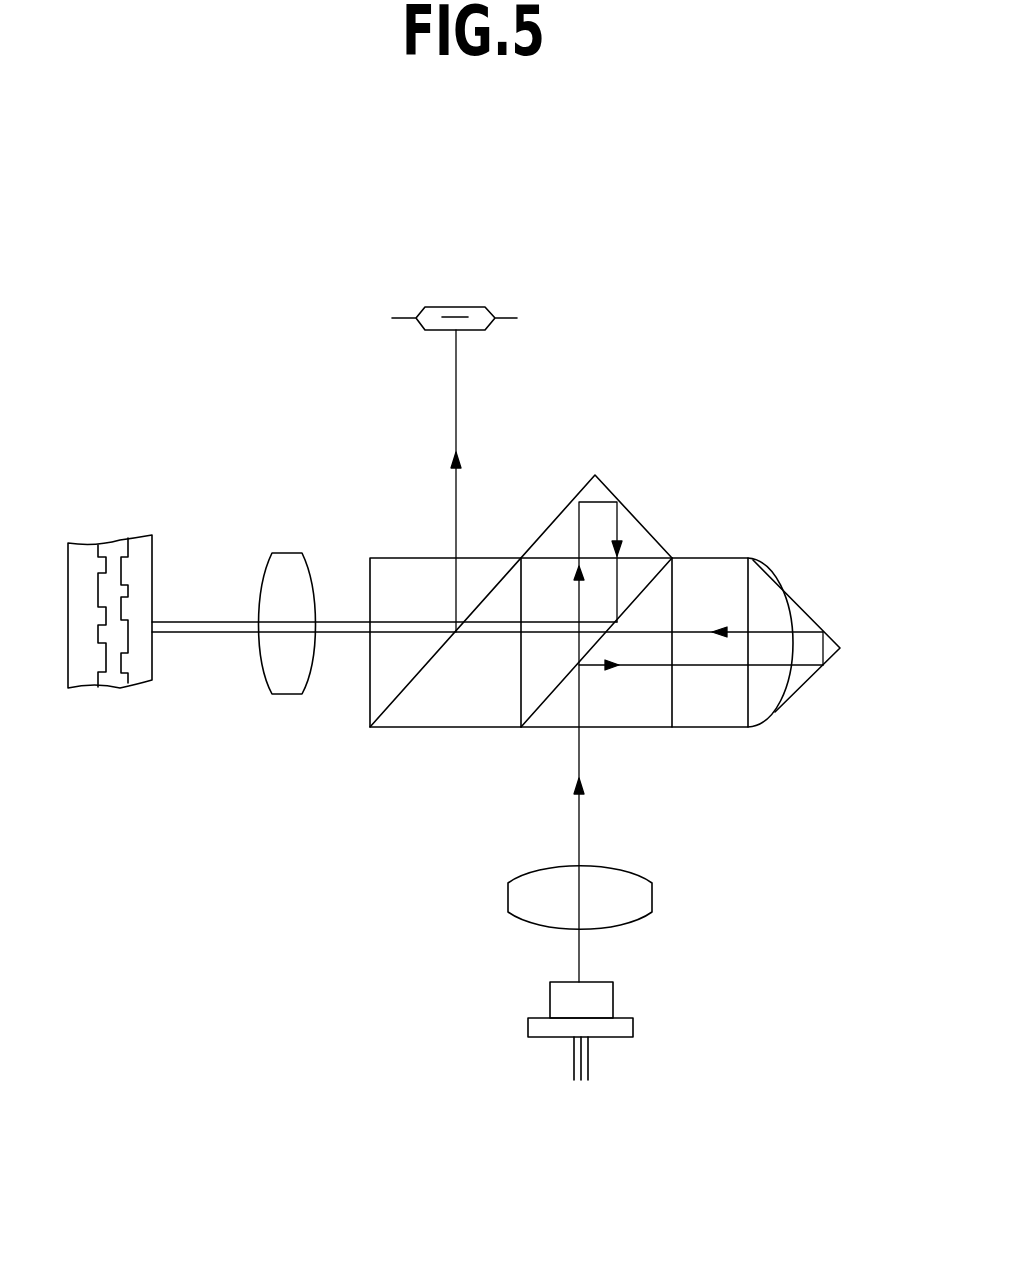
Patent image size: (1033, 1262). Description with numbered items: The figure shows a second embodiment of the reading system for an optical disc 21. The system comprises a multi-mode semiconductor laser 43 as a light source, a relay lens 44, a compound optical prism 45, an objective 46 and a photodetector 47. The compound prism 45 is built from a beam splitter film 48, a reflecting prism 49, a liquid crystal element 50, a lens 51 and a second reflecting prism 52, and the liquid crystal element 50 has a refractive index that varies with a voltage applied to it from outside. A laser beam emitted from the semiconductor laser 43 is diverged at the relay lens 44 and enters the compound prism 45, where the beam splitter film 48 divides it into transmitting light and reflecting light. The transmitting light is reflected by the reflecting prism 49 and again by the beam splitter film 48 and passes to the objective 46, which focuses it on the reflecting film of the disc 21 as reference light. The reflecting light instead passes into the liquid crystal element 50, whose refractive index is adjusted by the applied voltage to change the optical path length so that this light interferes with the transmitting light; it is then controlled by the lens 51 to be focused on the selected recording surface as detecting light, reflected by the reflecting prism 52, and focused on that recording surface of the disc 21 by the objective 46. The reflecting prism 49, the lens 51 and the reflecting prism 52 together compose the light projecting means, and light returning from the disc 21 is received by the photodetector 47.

The disc 21 is at (142, 560).
The multi-mode semiconductor laser 43 is at (612, 997).
The relay lens 44 is at (608, 875).
The compound optical prism 45 is at (637, 605).
The objective 46 is at (287, 680).
The photodetector 47 is at (468, 307).
The beam splitter film 48 is at (548, 705).
The reflecting prism 49 is at (428, 668).
The liquid crystal element 50 is at (725, 718).
The lens 51 is at (763, 598).
The reflecting prism 52 is at (807, 680).